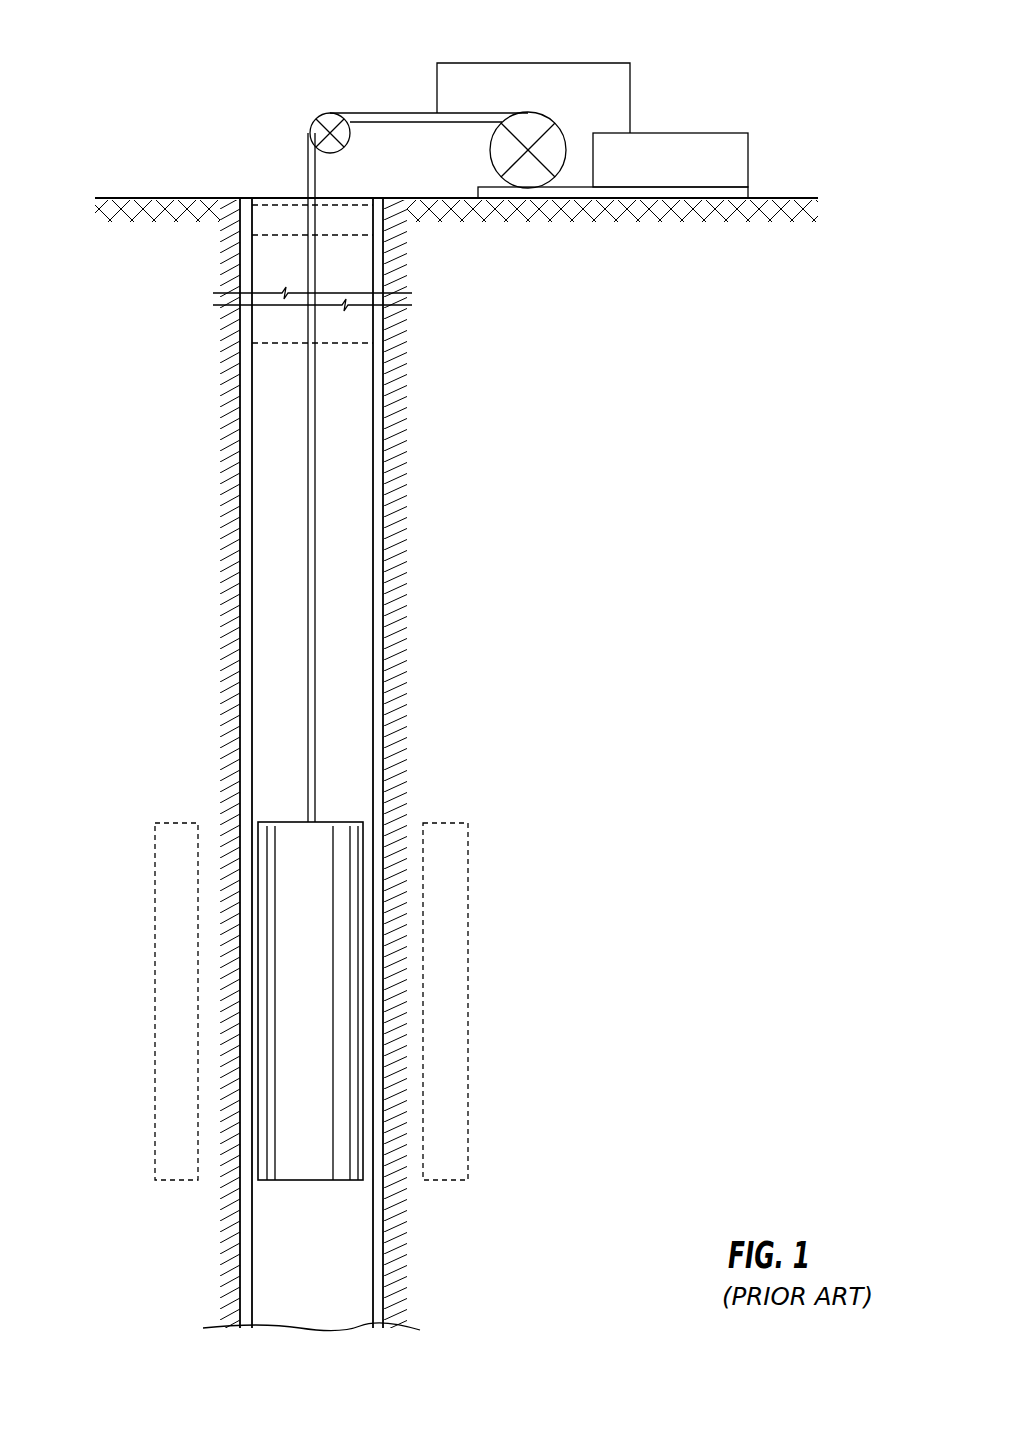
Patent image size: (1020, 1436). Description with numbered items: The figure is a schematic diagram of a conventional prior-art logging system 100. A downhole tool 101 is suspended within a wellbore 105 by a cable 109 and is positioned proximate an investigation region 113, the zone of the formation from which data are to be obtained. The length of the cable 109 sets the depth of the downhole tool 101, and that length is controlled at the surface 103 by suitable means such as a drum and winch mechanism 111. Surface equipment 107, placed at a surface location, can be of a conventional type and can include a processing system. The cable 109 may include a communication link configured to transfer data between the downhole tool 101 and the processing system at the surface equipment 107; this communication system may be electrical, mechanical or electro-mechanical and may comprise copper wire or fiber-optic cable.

The logging system 100 is at (758, 497).
The downhole tool 101 is at (280, 820).
The surface 103 is at (158, 196).
The wellbore 105 is at (273, 213).
The surface equipment 107 is at (725, 147).
The cable 109 is at (300, 195).
The drum and winch mechanism 111 is at (532, 115).
The investigation region 113 is at (472, 832).